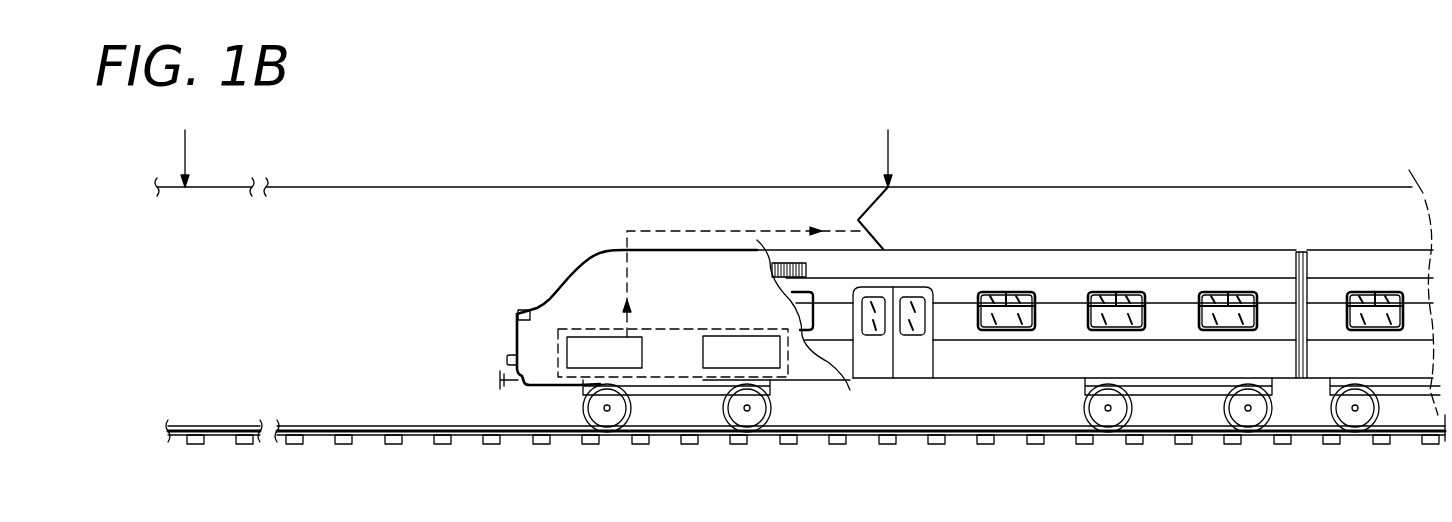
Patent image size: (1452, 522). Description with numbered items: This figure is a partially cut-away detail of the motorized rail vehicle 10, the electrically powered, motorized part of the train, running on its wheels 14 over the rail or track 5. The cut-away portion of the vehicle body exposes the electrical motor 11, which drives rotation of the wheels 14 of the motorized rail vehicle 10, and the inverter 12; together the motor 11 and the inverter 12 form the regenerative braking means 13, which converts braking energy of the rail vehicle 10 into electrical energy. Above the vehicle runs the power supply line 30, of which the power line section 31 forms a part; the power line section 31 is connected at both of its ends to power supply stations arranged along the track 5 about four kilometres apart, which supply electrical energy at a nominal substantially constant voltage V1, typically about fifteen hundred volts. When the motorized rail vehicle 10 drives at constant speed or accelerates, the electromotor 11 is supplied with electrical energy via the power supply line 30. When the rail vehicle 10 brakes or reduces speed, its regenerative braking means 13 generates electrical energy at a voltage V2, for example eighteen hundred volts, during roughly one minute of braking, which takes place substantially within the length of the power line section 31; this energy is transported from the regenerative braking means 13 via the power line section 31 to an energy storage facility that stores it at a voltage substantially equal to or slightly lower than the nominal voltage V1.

The track 5 is at (341, 426).
The motorized rail vehicle 10 is at (933, 346).
The electrical motor 11 is at (602, 350).
The inverter 12 is at (738, 346).
The regenerative braking means 13 is at (672, 331).
The wheels 14 is at (735, 412).
The power supply line 30 is at (221, 188).
The power line section 31 is at (519, 187).
The nominal voltage V1 is at (184, 164).
The braking voltage V2 is at (627, 231).